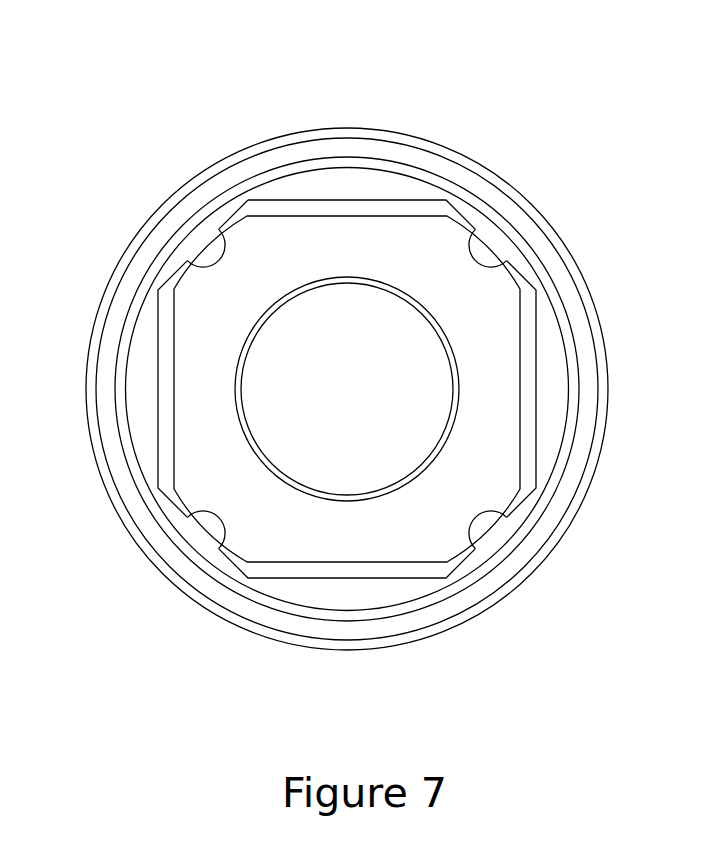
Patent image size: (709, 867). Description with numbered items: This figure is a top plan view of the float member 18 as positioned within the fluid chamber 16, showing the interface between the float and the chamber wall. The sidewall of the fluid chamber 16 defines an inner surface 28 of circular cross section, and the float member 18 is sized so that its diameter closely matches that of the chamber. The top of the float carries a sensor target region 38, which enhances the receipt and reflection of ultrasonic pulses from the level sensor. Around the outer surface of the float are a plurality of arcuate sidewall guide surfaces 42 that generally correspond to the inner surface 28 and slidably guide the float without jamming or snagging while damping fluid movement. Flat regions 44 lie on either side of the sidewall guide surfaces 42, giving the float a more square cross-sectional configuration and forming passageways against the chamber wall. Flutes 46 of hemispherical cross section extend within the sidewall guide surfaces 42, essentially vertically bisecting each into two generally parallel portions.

The fluid chamber 16 is at (602, 313).
The float member 18 is at (525, 422).
The inner surface 28 is at (412, 173).
The sensor target region 38 is at (343, 398).
The sidewall guide surfaces 42 is at (355, 187).
The flat regions 44 is at (303, 200).
The flutes 46 is at (492, 243).